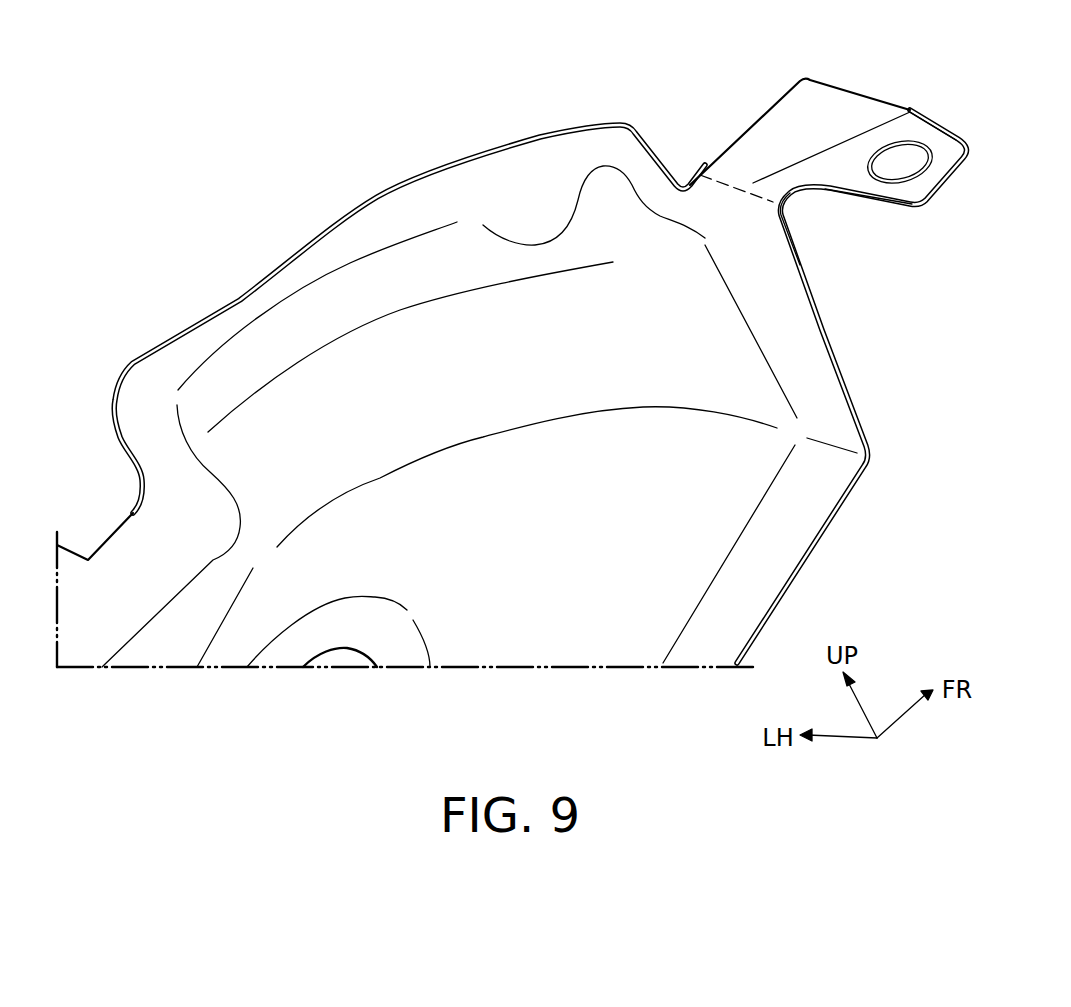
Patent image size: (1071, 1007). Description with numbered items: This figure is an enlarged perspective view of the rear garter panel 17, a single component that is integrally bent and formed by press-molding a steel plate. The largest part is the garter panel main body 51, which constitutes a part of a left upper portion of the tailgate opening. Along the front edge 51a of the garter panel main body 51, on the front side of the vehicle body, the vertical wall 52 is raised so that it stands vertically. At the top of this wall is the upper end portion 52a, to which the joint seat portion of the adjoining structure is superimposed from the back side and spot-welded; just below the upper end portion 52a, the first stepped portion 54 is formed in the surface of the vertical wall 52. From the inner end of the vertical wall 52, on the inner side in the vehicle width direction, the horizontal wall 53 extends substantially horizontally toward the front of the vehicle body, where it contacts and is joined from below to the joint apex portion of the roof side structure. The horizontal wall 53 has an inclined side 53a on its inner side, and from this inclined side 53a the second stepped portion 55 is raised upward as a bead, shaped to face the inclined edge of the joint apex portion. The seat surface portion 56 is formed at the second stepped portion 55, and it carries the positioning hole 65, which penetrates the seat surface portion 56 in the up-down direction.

The rear garter panel 17 is at (257, 215).
The garter panel main body 51 is at (707, 545).
The front edge 51a is at (500, 440).
The vertical wall 52 is at (597, 347).
The upper end portion 52a is at (375, 230).
The horizontal wall 53 is at (782, 118).
The inclined side 53a is at (812, 147).
The first stepped portion 54 is at (497, 227).
The second stepped portion 55 is at (843, 138).
The seat surface portion 56 is at (910, 198).
The positioning hole 65 is at (917, 173).